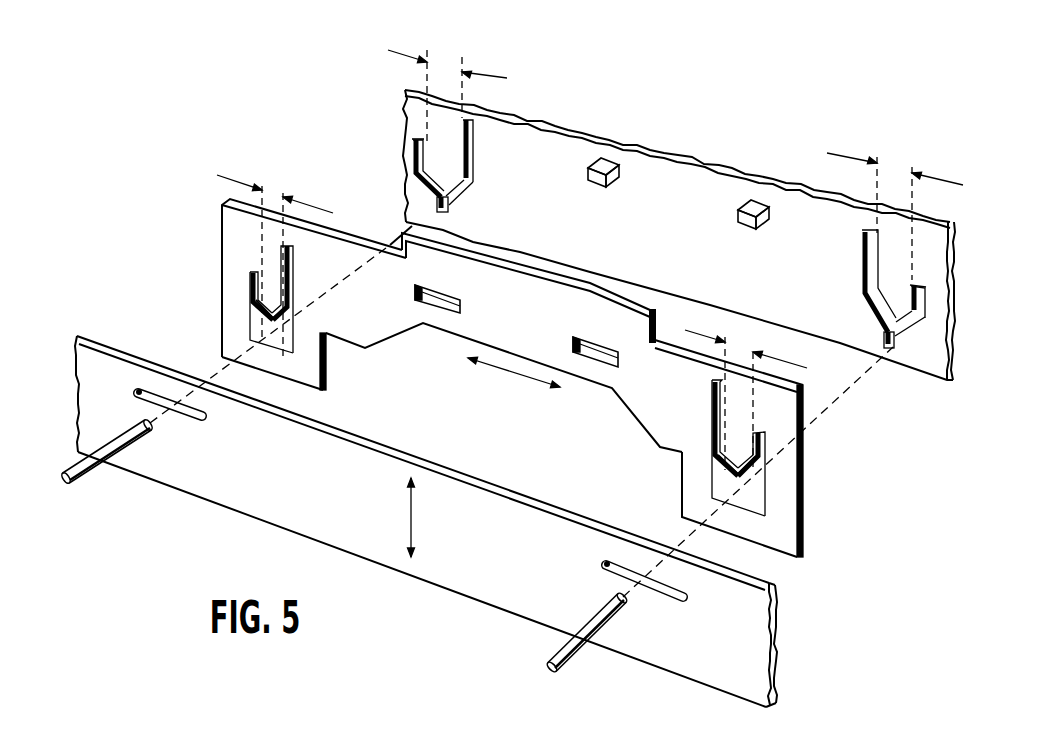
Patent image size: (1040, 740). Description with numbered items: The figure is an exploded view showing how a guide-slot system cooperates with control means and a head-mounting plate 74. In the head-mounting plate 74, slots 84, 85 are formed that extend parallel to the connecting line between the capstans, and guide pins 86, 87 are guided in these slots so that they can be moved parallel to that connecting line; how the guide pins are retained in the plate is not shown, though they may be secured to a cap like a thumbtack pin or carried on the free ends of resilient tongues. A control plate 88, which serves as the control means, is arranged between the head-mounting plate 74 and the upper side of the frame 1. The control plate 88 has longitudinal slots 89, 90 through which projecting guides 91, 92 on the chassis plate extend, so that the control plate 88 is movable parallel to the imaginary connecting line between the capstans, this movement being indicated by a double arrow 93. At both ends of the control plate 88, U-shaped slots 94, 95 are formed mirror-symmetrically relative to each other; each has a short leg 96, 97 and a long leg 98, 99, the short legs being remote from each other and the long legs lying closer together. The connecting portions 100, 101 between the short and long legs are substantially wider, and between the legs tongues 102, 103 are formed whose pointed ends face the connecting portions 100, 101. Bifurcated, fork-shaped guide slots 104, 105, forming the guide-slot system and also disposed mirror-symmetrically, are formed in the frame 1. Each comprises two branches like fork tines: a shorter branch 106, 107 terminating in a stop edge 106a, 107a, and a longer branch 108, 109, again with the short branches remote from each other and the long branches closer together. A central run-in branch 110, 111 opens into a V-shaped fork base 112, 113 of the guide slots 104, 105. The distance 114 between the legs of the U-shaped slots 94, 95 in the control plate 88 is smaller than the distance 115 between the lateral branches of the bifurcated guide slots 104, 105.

The frame 1 is at (656, 177).
The head-mounting plate 74 is at (407, 521).
The slot 84 is at (140, 402).
The slot 85 is at (668, 588).
The guide pin 86 is at (75, 465).
The guide pin 87 is at (563, 650).
The control plate 88 is at (500, 390).
The longitudinal slot 89 is at (442, 300).
The longitudinal slot 90 is at (600, 353).
The projecting guide 91 is at (590, 180).
The projecting guide 92 is at (742, 222).
The double arrow 93 is at (514, 383).
The U-shaped slot 94 is at (279, 299).
The U-shaped slot 95 is at (728, 461).
The short leg 96 is at (250, 280).
The short leg 97 is at (765, 447).
The long leg 98 is at (290, 255).
The long leg 99 is at (718, 394).
The connecting portion 100 is at (328, 378).
The connecting portion 101 is at (755, 498).
The tongue 102 is at (270, 313).
The tongue 103 is at (760, 475).
The bifurcated guide slot 104 is at (426, 169).
The bifurcated guide slot 105 is at (899, 316).
The short branch 106 is at (412, 153).
The stop edge 106a is at (427, 138).
The short branch 107 is at (922, 294).
The stop edge 107a is at (918, 284).
The long branch 108 is at (470, 130).
The long branch 109 is at (870, 255).
The central run-in branch 110 is at (448, 213).
The central run-in branch 111 is at (893, 352).
The V-shaped fork base 112 is at (453, 193).
The V-shaped fork base 113 is at (900, 324).
The distance between the legs 114 is at (271, 192).
The distance between the lateral branches 115 is at (444, 60).